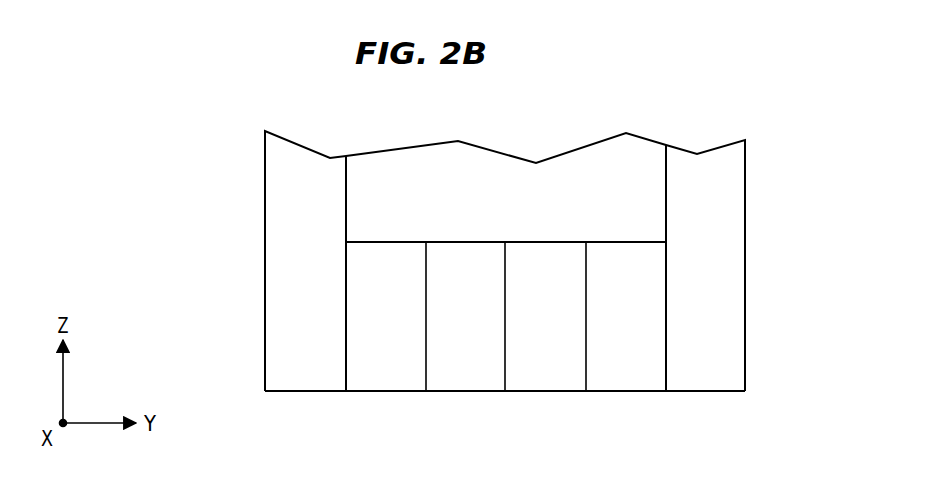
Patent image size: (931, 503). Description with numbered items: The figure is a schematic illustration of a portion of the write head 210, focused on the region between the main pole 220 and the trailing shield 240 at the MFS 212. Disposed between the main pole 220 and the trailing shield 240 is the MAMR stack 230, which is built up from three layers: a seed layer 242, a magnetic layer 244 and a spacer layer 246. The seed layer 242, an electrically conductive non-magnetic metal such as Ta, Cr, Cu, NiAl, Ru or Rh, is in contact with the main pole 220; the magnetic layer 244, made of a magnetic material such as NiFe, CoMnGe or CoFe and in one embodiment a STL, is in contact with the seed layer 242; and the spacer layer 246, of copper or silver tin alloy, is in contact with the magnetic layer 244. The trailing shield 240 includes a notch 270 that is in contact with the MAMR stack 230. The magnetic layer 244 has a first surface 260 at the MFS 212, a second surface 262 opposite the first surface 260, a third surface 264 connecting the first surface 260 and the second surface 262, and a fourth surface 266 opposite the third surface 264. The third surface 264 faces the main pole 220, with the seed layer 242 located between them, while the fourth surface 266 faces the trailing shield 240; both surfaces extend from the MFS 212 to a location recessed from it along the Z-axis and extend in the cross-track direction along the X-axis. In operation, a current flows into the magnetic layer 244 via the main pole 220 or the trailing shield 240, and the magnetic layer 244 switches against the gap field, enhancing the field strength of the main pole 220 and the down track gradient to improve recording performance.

The write head 210 is at (236, 171).
The MFS 212 is at (708, 393).
The main pole 220 is at (280, 300).
The MAMR stack 230 is at (356, 396).
The trailing shield 240 is at (707, 273).
The seed layer 242 is at (380, 372).
The magnetic layer 244 is at (472, 372).
The spacer layer 246 is at (545, 372).
The first surface 260 is at (505, 392).
The second surface 262 is at (463, 242).
The third surface 264 is at (428, 292).
The fourth surface 266 is at (507, 292).
The notch 270 is at (630, 372).